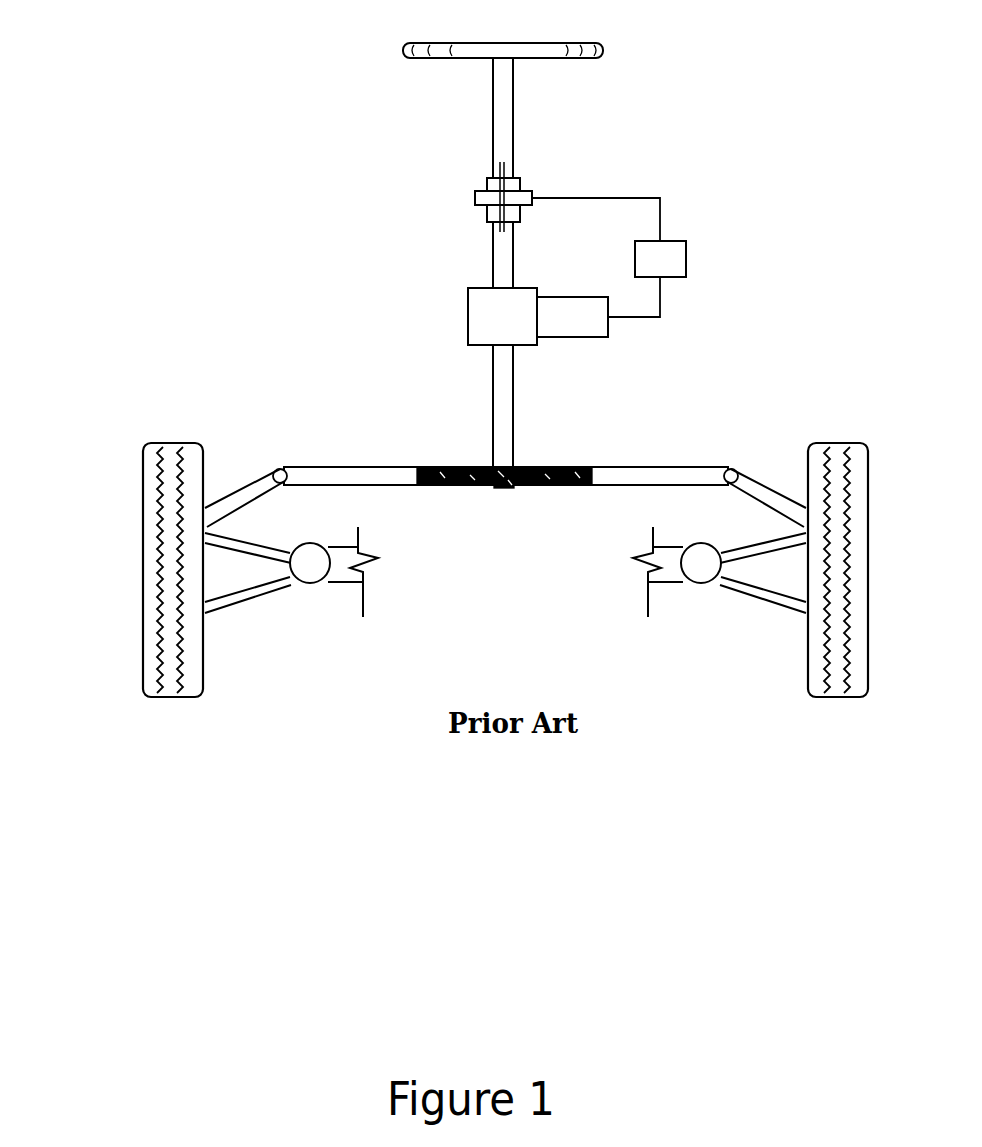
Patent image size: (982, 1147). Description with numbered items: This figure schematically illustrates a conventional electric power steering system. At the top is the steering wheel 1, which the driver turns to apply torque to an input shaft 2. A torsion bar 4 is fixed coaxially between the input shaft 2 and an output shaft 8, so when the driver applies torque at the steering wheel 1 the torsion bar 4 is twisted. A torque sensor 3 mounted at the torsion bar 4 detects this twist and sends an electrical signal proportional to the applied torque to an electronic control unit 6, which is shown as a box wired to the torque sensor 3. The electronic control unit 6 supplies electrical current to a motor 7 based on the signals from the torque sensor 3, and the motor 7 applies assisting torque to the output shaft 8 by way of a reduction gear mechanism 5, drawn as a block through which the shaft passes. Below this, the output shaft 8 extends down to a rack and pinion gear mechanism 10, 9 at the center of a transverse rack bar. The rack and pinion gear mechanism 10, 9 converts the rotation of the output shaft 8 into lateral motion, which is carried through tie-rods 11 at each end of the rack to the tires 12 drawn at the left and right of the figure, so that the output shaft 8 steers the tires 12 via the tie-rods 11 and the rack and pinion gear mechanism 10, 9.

The steering wheel 1 is at (392, 51).
The input shaft 2 is at (485, 113).
The torque sensor 3 is at (466, 201).
The torsion bar 4 is at (521, 236).
The reduction gear mechanism 5 is at (458, 335).
The electronic control unit 6 is at (697, 257).
The motor 7 is at (619, 336).
The output shaft 8 is at (522, 413).
The pinion gear 9 is at (491, 500).
The rack gear 10 is at (525, 500).
The tie-rods 11 is at (239, 474).
The tires 12 is at (127, 456).